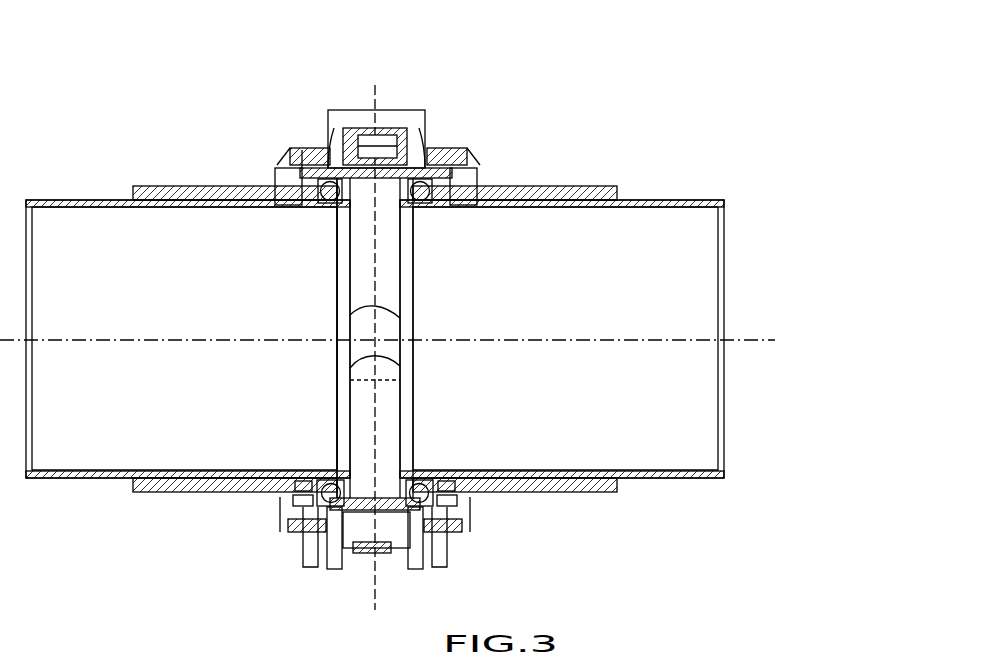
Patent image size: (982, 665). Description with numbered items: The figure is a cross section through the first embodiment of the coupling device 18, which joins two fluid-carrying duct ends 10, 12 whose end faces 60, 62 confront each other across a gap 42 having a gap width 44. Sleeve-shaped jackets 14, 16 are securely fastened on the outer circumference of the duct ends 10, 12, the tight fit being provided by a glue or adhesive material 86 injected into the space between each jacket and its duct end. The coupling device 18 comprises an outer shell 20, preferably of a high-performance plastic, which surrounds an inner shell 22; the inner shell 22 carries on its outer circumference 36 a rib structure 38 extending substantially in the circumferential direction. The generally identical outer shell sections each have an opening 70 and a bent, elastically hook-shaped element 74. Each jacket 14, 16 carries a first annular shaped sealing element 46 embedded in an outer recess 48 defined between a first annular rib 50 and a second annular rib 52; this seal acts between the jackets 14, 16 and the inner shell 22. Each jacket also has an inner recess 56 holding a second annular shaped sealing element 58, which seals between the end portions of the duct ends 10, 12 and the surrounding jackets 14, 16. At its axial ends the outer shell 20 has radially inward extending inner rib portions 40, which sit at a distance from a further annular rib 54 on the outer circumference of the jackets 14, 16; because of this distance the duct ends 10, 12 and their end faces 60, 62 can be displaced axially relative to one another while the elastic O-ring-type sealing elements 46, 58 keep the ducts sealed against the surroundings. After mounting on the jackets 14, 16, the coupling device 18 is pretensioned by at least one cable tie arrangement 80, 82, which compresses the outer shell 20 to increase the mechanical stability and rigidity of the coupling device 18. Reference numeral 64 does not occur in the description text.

The duct end 10 is at (104, 200).
The duct end 12 is at (683, 198).
The jacket 14 is at (195, 186).
The jacket 16 is at (548, 186).
The coupling device 18 is at (603, 118).
The outer shell 20 is at (365, 110).
The inner shell 22 is at (382, 462).
The outer circumference 36 is at (358, 480).
The rib structure 38 is at (378, 554).
The inner rib portions 40 is at (272, 497).
The gap 42 is at (388, 405).
The gap width 44 is at (370, 398).
The first annular shaped sealing element 46 is at (326, 205).
The outer recess 48 is at (330, 165).
The first annular rib 50 is at (336, 548).
The second annular rib 52 is at (315, 530).
The further annular rib 54 is at (278, 505).
The inner recess 56 is at (277, 165).
The second annular shaped sealing element 58 is at (292, 200).
The end face 60 is at (398, 357).
The end face 62 is at (378, 304).
The gap 64 is at (441, 318).
The opening 70 is at (350, 140).
The hook-shaped element 74 is at (388, 128).
The cable tie arrangement 80 is at (312, 165).
The cable tie arrangement 82 is at (455, 170).
The glue or adhesive material 86 is at (165, 203).